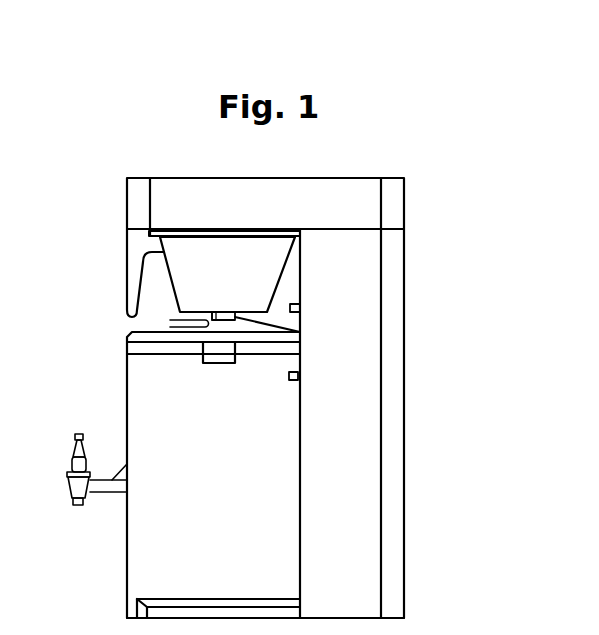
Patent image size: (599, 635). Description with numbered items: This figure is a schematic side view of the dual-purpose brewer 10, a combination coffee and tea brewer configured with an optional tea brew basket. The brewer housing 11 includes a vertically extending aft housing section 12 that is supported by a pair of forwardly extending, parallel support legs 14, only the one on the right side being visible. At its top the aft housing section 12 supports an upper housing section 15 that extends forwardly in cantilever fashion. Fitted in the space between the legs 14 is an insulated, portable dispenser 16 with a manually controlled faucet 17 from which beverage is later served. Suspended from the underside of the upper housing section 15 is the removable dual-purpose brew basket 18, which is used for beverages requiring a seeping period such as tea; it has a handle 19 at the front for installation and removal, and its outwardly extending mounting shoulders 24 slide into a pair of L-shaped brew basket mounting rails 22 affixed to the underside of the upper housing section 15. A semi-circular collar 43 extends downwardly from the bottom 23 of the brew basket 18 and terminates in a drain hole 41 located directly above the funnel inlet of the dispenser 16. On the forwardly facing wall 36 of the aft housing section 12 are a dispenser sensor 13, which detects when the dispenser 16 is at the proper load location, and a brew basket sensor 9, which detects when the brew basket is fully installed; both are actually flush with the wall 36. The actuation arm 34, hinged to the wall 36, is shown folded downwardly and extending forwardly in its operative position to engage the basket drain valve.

The brew basket sensor 9 is at (300, 307).
The dual-purpose brewer 10 is at (412, 234).
The brewer housing 11 is at (370, 455).
The aft housing section 12 is at (353, 366).
The dispenser sensor 13 is at (298, 377).
The support leg 14 is at (163, 608).
The upper housing section 15 is at (298, 187).
The dispenser 16 is at (137, 385).
The faucet 17 is at (72, 463).
The dual-purpose brew basket 18 is at (182, 270).
The handle 19 is at (127, 283).
The brew basket mounting rails 22 is at (178, 241).
The bottom 23 is at (205, 320).
The mounting shoulders 24 is at (155, 244).
The actuation arm 34 is at (283, 323).
The forwardly facing wall 36 is at (292, 281).
The drain hole 41 is at (175, 327).
The semi-circular collar 43 is at (214, 316).